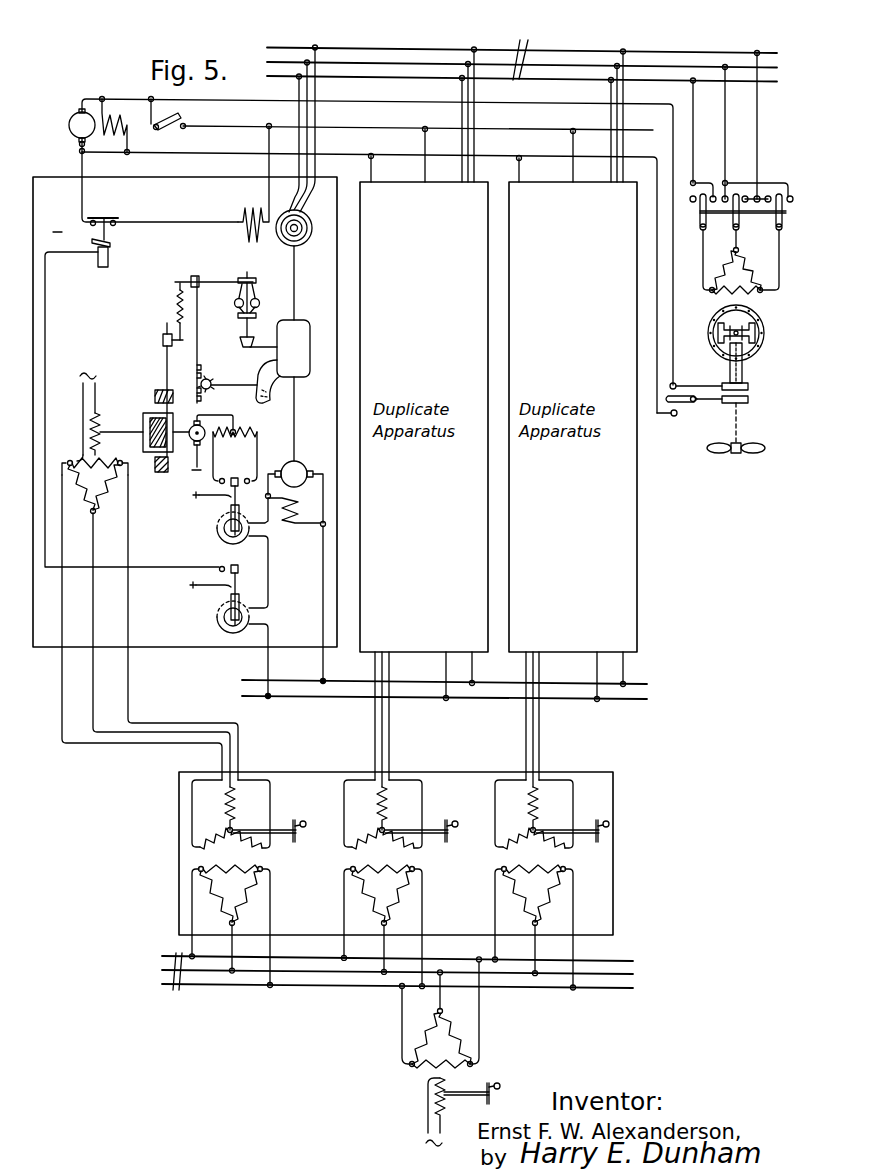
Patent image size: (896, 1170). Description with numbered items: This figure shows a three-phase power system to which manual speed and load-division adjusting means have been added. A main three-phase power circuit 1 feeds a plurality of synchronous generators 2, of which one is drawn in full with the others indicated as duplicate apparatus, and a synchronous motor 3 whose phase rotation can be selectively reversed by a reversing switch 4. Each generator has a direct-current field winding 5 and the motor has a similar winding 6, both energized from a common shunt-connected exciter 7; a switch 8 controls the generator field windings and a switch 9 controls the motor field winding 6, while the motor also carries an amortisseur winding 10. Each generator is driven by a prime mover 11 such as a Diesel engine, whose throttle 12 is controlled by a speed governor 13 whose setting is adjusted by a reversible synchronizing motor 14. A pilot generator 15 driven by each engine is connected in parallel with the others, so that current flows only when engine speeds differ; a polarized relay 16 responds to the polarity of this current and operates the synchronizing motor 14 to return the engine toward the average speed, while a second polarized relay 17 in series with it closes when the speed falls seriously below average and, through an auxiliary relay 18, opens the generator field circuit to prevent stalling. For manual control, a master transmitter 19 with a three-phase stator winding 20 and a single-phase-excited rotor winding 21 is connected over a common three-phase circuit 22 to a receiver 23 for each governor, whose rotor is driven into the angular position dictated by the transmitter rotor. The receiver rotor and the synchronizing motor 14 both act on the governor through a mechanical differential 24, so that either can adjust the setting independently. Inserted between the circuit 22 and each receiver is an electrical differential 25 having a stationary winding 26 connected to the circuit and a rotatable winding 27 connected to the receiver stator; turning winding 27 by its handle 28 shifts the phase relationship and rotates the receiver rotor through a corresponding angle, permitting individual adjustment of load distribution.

The main three-phase power circuit 1 is at (522, 53).
The synchronous generator 2 is at (306, 241).
The synchronous motor 3 is at (778, 320).
The reversing switch 4 is at (782, 213).
The direct-current field winding 5 is at (252, 210).
The motor field winding 6 is at (720, 325).
The shunt-connected exciter 7 is at (98, 126).
The switch 8 is at (168, 124).
The switch 9 is at (686, 406).
The amortisseur winding 10 is at (756, 353).
The prime mover 11 is at (310, 322).
The throttle 12 is at (258, 380).
The speed governor 13 is at (259, 305).
The reversible synchronizing motor 14 is at (216, 449).
The pilot generator 15 is at (328, 467).
The polarized relay 16 is at (221, 526).
The polarized relay 17 is at (219, 617).
The auxiliary relay 18 is at (110, 247).
The master transmitter 19 is at (418, 1086).
The three-phase stator winding 20 is at (428, 1036).
The rotor winding 21 is at (444, 1110).
The three-phase circuit 22 is at (397, 980).
The receiver 23 is at (120, 454).
The mechanical differential 24 is at (160, 474).
The electrical differential 25 is at (291, 870).
The three-phase winding 26 is at (382, 926).
The three-phase winding 27 is at (236, 806).
The handle 28 is at (421, 820).